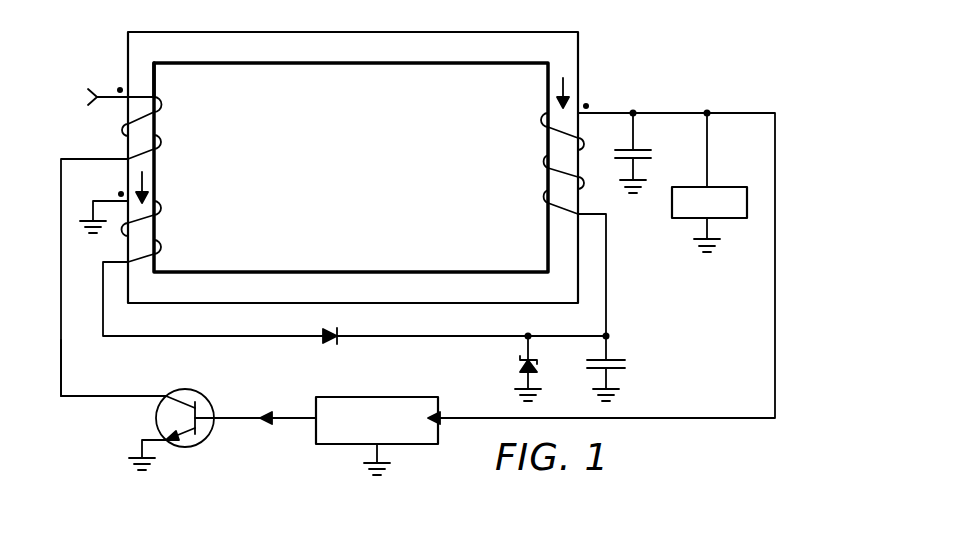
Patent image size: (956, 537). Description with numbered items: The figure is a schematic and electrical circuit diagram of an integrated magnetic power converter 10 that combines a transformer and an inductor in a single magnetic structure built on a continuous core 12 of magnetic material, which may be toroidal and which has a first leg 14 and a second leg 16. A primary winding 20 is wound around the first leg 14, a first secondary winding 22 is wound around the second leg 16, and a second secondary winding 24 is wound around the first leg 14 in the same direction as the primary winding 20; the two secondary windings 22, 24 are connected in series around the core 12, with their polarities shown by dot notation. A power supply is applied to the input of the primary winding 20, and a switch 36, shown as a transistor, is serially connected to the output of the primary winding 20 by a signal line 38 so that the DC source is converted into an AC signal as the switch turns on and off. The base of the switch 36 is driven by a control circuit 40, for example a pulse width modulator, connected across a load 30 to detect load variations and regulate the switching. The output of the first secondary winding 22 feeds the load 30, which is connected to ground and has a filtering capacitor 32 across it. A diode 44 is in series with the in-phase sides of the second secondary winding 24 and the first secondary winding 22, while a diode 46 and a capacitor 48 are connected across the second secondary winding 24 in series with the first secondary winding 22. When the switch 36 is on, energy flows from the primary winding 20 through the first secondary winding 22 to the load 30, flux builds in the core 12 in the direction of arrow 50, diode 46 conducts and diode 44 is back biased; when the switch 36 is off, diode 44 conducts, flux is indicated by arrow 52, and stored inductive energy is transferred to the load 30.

The integrated magnetic power converter 10 is at (620, 47).
The core 12 is at (417, 47).
The first leg 14 is at (138, 80).
The second leg 16 is at (562, 252).
The primary winding 20 is at (162, 141).
The first secondary winding 22 is at (546, 162).
The second secondary winding 24 is at (162, 209).
The load 30 is at (742, 213).
The filtering capacitor 32 is at (637, 145).
The switch 36 is at (205, 440).
The signal line 38 is at (61, 368).
The control circuit 40 is at (397, 397).
The diode 44 is at (330, 340).
The diode 46 is at (521, 364).
The capacitor 48 is at (614, 360).
The arrow 50 is at (563, 84).
The arrow 52 is at (150, 180).